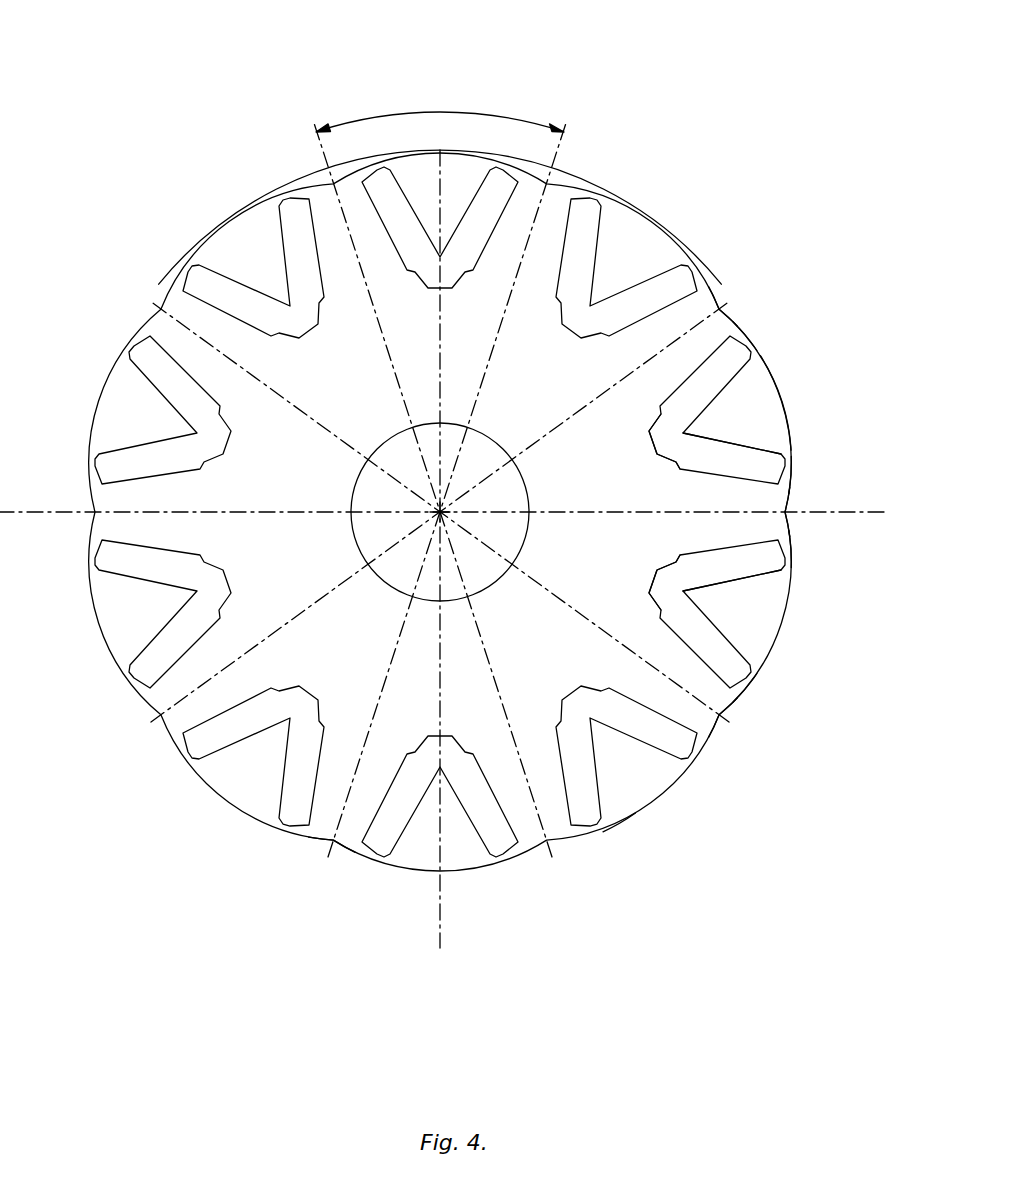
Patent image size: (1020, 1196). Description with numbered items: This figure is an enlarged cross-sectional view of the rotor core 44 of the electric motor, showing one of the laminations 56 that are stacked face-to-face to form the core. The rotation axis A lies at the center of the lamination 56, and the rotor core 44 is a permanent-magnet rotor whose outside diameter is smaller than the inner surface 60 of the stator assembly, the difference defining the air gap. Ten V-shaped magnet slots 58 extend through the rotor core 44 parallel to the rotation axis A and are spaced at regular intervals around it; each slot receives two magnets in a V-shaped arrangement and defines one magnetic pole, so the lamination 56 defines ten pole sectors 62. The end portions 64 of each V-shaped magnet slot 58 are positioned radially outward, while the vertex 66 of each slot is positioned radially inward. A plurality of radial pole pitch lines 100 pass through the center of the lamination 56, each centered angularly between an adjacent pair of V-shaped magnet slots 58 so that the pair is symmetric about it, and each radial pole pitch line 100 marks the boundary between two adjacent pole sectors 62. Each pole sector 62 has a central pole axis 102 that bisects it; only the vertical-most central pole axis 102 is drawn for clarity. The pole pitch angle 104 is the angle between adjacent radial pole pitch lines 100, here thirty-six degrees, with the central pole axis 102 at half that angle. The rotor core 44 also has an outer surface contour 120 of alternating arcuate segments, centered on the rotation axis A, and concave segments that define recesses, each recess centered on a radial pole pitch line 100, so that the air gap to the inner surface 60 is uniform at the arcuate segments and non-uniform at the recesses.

The rotor core 44 is at (450, 469).
The pole pitch angle 104 is at (407, 112).
The inner surface of the stator assembly 60 is at (618, 193).
The pole sector 62 is at (628, 248).
The radial pole pitch line 100 is at (723, 288).
The end portion of the V-shaped magnet slot 64 is at (745, 335).
The lamination 56 is at (767, 367).
The V-shaped magnet slot 58 is at (750, 447).
The vertex of the V-shaped magnet slot 66 is at (653, 445).
The outer surface contour 120 is at (615, 815).
The central pole axis 102 is at (440, 900).
The rotation axis A is at (442, 508).